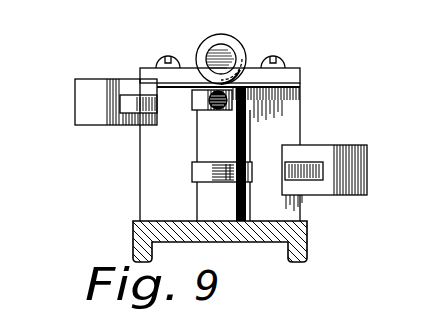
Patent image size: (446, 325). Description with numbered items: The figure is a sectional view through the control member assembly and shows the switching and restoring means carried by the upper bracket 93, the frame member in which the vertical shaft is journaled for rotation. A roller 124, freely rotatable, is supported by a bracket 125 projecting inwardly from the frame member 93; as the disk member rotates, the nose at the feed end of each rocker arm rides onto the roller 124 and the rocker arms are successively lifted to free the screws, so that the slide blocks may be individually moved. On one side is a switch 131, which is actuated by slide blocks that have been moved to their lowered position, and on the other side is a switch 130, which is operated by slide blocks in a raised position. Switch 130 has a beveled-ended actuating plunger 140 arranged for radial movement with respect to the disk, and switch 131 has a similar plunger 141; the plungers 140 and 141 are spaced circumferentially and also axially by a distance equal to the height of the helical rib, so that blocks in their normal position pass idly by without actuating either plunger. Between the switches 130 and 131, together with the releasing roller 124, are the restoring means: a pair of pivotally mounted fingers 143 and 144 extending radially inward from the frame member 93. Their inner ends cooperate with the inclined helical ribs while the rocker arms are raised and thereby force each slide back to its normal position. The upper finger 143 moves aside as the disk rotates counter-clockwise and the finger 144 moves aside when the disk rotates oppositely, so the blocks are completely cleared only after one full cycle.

The upper bracket 93 is at (230, 237).
The roller 124 is at (201, 45).
The bracket 125 is at (287, 77).
The switch 130 is at (355, 169).
The switch 131 is at (84, 104).
The actuating plunger 140 is at (312, 162).
The plunger 141 is at (125, 124).
The finger 143 is at (232, 104).
The finger 144 is at (192, 176).